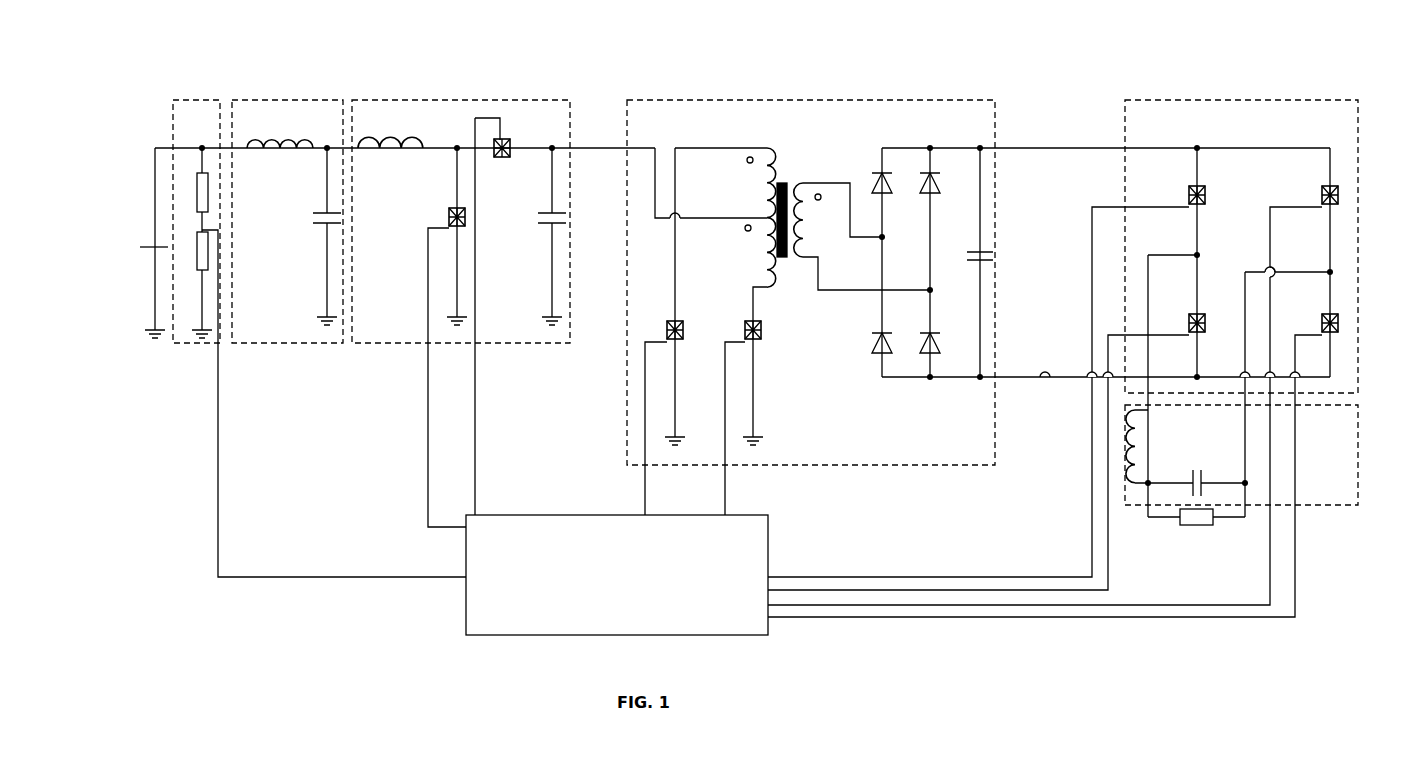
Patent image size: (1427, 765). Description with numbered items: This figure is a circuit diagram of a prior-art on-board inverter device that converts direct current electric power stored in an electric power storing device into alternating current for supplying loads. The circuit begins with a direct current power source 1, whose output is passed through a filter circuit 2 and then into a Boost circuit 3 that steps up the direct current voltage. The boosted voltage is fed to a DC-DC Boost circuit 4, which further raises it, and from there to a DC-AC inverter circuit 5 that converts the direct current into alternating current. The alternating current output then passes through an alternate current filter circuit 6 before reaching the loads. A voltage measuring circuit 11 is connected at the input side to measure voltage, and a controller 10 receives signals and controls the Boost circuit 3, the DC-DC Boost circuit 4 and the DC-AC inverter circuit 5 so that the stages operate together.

The direct current power source 1 is at (152, 250).
The voltage measuring circuit 11 is at (195, 100).
The filter circuit 2 is at (285, 100).
The Boost circuit 3 is at (460, 100).
The DC-DC Boost circuit 4 is at (810, 100).
The DC-AC inverter circuit 5 is at (1245, 100).
The alternate current filter circuit 6 is at (1360, 441).
The controller 10 is at (618, 636).